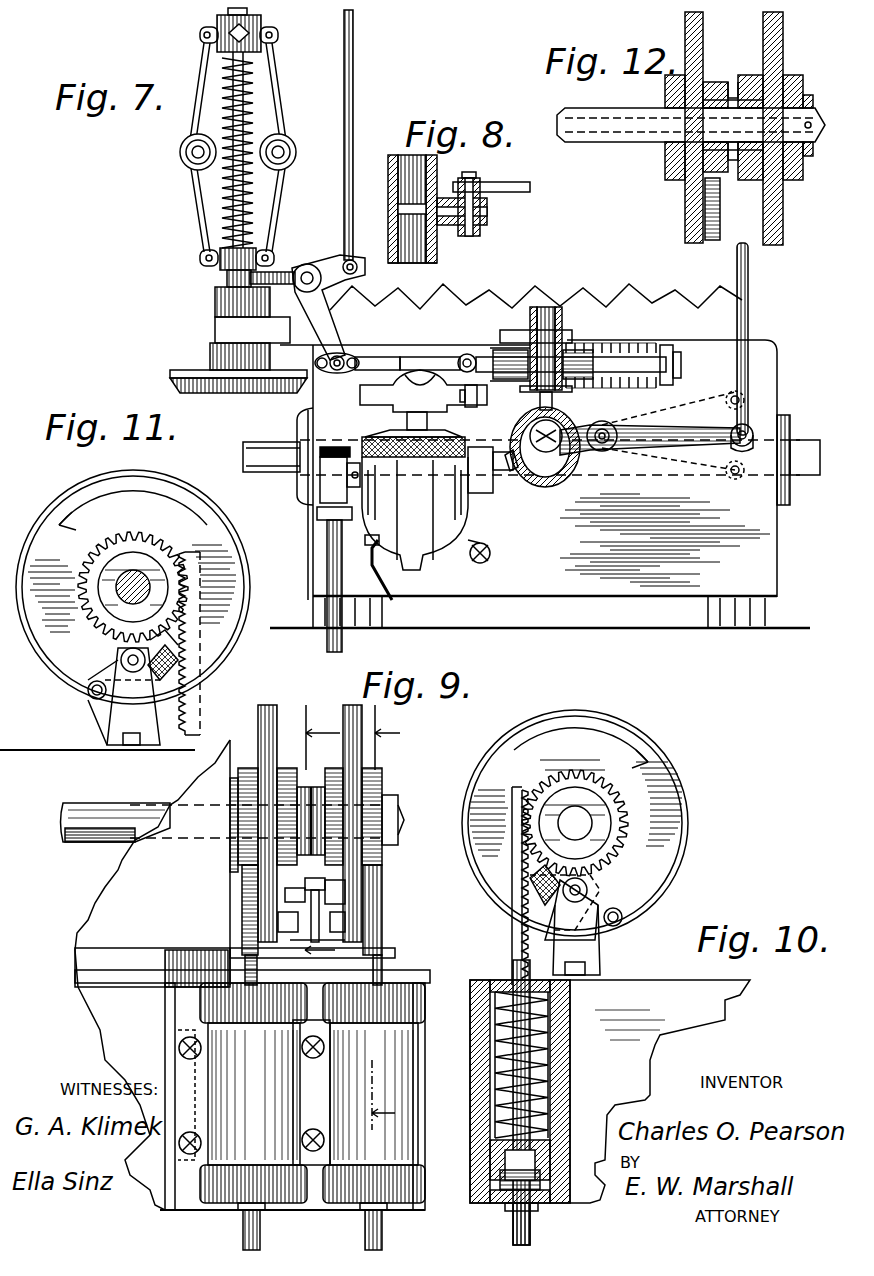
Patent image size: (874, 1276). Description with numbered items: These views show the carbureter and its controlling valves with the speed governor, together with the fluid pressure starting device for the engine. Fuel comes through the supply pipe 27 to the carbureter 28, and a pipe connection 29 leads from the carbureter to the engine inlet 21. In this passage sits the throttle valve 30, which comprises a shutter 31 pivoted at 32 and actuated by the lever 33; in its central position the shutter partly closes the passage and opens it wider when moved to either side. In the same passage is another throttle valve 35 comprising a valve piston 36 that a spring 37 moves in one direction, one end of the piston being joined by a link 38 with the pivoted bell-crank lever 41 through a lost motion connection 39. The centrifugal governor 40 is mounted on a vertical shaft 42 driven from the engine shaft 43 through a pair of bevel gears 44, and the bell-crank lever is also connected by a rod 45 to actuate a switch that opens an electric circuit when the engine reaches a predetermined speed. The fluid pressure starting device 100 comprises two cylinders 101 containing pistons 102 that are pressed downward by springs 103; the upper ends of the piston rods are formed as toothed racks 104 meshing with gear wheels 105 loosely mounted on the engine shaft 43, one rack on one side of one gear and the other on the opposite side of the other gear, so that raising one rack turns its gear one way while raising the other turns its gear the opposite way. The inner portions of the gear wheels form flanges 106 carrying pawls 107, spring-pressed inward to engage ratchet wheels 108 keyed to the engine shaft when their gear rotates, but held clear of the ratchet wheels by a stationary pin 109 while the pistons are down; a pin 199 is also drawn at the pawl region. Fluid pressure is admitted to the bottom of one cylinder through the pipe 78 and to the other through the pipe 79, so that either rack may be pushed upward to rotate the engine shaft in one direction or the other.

In FIG. 7, the engine inlet 21 is at (563, 304).
In FIG. 7, the supply pipe 27 is at (337, 563).
In FIG. 7, the carbureter 28 is at (470, 518).
In FIG. 7, the pipe connection 29 is at (540, 480).
In FIG. 8, the pipe connection 29 is at (417, 260).
In FIG. 7, the throttle valve 30 is at (533, 426).
In FIG. 7, the shutter 31 is at (605, 455).
In FIG. 8, the shutter 31 is at (393, 210).
In FIG. 7, the pivot 32 is at (607, 426).
In FIG. 8, the pivot 32 is at (483, 222).
In FIG. 7, the lever 33 is at (648, 428).
In FIG. 8, the lever 33 is at (525, 186).
In FIG. 7, the throttle valve 35 is at (527, 330).
In FIG. 7, the valve piston 36 is at (468, 355).
In FIG. 7, the spring 37 is at (641, 346).
In FIG. 7, the link 38 is at (402, 360).
In FIG. 7, the lost motion connection 39 is at (326, 376).
In FIG. 7, the centrifugal governor 40 is at (187, 193).
In FIG. 7, the bell-crank lever 41 is at (330, 256).
In FIG. 7, the vertical shaft 42 is at (237, 190).
In FIG. 7, the engine shaft 43 is at (271, 484).
In FIG. 12, the engine shaft 43 is at (636, 128).
In FIG. 7, the bevel gears 44 is at (272, 380).
In FIG. 7, the rod 45 is at (343, 88).
In FIG. 9, the pipe 78 is at (383, 1232).
In FIG. 10, the pipe 78 is at (532, 1232).
In FIG. 9, the pipe 79 is at (262, 1232).
In FIG. 9, the fluid pressure starting device 100 is at (369, 740).
In FIG. 9, the cylinders 101 is at (245, 1045).
In FIG. 10, the cylinders 101 is at (478, 1072).
In FIG. 10, the pistons 102 is at (493, 1160).
In FIG. 10, the springs 103 is at (548, 1052).
In FIG. 11, the rack 104 is at (195, 715).
In FIG. 9, the rack 104 is at (282, 948).
In FIG. 10, the rack 104 is at (520, 932).
In FIG. 12, the gear wheels 105 is at (665, 182).
In FIG. 12, the flanges 106 is at (692, 243).
In FIG. 11, the flanges 106 is at (100, 490).
In FIG. 9, the flanges 106 is at (272, 700).
In FIG. 10, the flanges 106 is at (630, 736).
In FIG. 12, the pawls 107 is at (712, 245).
In FIG. 11, the pawls 107 is at (186, 656).
In FIG. 10, the pawls 107 is at (532, 890).
In FIG. 12, the ratchet wheels 108 is at (748, 80).
In FIG. 11, the ratchet wheels 108 is at (108, 550).
In FIG. 9, the ratchet wheels 108 is at (345, 782).
In FIG. 10, the ratchet wheels 108 is at (575, 823).
In FIG. 11, the stationary pin 109 is at (122, 661).
In FIG. 10, the stationary pin 109 is at (588, 888).
In FIG. 9, the pawl pin 199 is at (345, 893).